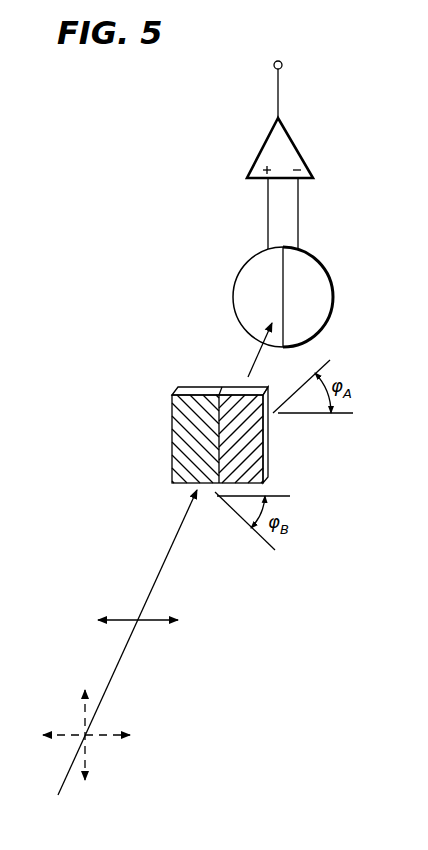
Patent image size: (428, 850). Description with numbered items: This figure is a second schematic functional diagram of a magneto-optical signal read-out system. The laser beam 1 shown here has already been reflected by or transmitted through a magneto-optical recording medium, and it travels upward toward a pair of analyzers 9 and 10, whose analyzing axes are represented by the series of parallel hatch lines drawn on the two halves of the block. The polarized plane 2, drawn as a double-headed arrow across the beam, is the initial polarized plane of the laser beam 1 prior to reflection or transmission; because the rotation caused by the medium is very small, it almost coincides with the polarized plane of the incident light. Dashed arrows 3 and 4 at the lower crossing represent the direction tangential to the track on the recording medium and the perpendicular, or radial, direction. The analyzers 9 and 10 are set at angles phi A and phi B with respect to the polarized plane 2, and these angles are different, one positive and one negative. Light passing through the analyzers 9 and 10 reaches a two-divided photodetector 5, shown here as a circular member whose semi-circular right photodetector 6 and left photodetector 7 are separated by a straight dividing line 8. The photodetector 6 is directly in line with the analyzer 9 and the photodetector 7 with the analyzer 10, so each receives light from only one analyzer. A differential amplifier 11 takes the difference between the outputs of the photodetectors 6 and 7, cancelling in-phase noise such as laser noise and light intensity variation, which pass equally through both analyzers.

The laser beam 1 is at (113, 677).
The polarized plane 2 is at (160, 622).
The tangential direction arrow 3 is at (125, 738).
The radial direction arrow 4 is at (88, 755).
The 2-divided photodetector 5 is at (333, 318).
The right photodetector 6 is at (313, 283).
The left photodetector 7 is at (238, 290).
The dividing line 8 is at (283, 348).
The analyzer 9 is at (217, 435).
The analyzer 10 is at (172, 437).
The differential amplifier 11 is at (288, 142).